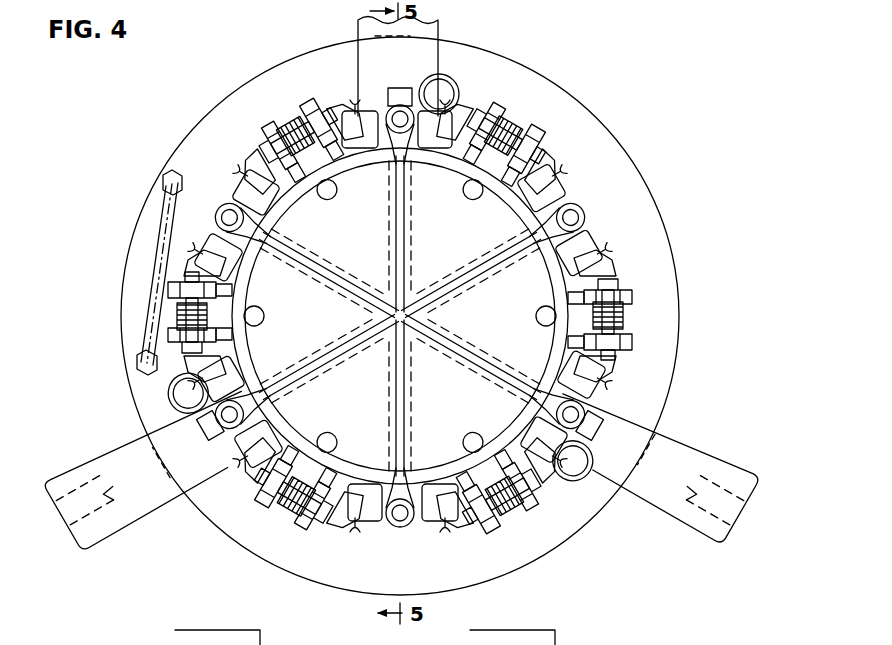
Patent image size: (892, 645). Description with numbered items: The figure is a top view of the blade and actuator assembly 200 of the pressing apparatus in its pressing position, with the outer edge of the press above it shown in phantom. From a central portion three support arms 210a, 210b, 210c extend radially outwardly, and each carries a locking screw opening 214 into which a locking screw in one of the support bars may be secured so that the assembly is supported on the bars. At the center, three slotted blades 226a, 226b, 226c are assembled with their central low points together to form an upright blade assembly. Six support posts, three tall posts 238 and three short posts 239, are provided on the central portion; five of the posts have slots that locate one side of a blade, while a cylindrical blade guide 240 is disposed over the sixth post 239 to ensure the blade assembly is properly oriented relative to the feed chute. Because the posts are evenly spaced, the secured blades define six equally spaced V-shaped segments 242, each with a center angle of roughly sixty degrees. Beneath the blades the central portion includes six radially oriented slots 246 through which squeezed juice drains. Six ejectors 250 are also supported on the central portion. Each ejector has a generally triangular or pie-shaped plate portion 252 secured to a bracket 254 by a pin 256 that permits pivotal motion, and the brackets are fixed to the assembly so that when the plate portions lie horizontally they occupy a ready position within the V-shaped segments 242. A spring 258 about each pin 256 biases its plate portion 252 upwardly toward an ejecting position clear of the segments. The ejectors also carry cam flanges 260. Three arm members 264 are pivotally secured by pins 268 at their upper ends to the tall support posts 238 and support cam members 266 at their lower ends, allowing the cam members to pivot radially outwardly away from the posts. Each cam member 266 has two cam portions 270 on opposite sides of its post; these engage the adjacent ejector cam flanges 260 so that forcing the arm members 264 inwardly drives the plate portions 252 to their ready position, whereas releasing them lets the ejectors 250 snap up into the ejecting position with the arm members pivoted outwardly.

The chuck assembly 200 is at (600, 104).
The support arm 210a is at (138, 507).
The support arm 210b is at (440, 34).
The support arm 210c is at (716, 456).
The locking screw opening 214 is at (58, 520).
The blade 226a is at (412, 420).
The blade 226b is at (474, 325).
The blade 226c is at (330, 352).
The tall support post 238 is at (362, 112).
The short support post 239 is at (168, 180).
The cylindrical blade guide 240 is at (435, 517).
The V-shaped segment 242 is at (174, 178).
The radially oriented slot 246 is at (336, 272).
The ejector 250 is at (265, 145).
The plate portion 252 is at (356, 199).
The bracket 254 is at (246, 152).
The pin 256 is at (500, 78).
The spring 258 is at (296, 128).
The cam flange 260 is at (566, 181).
The arm member 264 is at (186, 426).
The cam member 266 is at (347, 97).
The pin 268 is at (458, 78).
The cam portion 270 is at (282, 110).